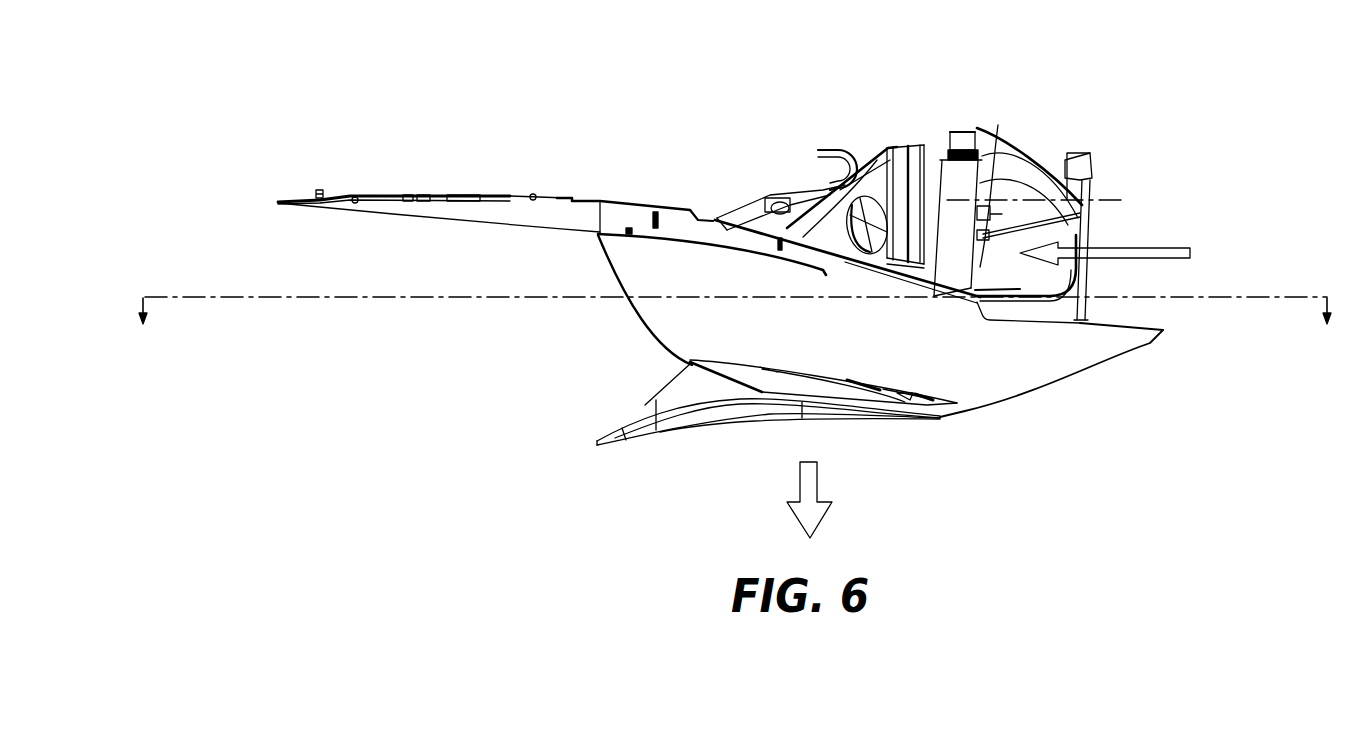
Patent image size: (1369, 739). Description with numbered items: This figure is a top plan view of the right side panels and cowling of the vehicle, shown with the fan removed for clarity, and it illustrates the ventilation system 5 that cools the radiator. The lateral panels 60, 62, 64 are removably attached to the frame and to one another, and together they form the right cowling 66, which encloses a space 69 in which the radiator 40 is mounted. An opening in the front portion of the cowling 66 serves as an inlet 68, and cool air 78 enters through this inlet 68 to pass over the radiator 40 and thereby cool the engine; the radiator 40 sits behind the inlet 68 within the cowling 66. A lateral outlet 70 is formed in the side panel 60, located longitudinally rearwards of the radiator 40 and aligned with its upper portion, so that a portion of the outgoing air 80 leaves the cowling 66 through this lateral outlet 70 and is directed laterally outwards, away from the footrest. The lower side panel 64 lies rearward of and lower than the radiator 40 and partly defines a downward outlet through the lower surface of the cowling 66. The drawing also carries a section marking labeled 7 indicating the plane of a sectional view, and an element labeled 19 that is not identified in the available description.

The ventilation system 5 is at (652, 79).
The section line 7- 7 is at (734, 313).
The pillar 19 is at (1113, 200).
The radiator 40 is at (955, 192).
The side panel 60 is at (1010, 386).
The lateral panel 62 is at (541, 218).
The lower side panel 64 is at (645, 413).
The cowling 66 is at (702, 272).
The inlet 68 is at (983, 267).
The space 69 is at (933, 210).
The lateral outlet 70 is at (872, 398).
The cool air 78 is at (1160, 248).
The outgoing air 80 is at (800, 518).